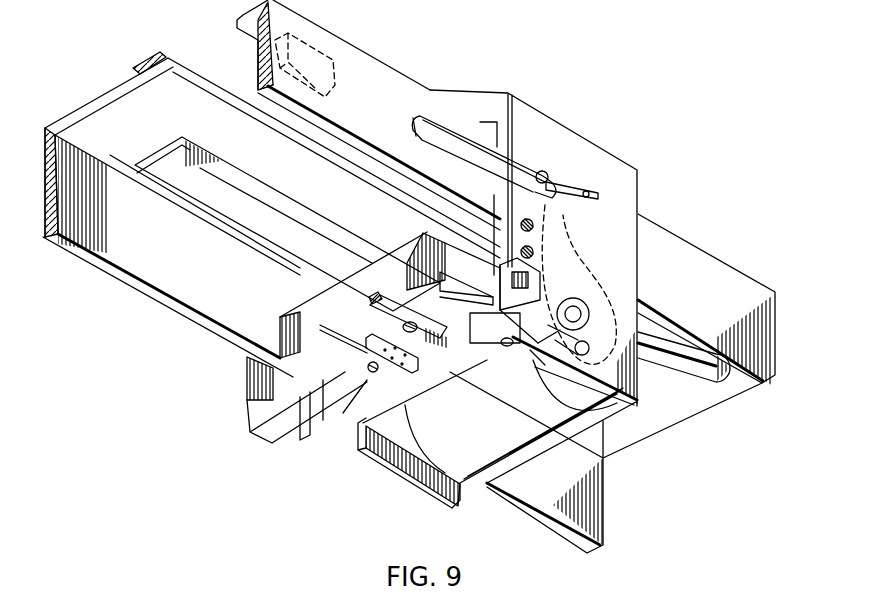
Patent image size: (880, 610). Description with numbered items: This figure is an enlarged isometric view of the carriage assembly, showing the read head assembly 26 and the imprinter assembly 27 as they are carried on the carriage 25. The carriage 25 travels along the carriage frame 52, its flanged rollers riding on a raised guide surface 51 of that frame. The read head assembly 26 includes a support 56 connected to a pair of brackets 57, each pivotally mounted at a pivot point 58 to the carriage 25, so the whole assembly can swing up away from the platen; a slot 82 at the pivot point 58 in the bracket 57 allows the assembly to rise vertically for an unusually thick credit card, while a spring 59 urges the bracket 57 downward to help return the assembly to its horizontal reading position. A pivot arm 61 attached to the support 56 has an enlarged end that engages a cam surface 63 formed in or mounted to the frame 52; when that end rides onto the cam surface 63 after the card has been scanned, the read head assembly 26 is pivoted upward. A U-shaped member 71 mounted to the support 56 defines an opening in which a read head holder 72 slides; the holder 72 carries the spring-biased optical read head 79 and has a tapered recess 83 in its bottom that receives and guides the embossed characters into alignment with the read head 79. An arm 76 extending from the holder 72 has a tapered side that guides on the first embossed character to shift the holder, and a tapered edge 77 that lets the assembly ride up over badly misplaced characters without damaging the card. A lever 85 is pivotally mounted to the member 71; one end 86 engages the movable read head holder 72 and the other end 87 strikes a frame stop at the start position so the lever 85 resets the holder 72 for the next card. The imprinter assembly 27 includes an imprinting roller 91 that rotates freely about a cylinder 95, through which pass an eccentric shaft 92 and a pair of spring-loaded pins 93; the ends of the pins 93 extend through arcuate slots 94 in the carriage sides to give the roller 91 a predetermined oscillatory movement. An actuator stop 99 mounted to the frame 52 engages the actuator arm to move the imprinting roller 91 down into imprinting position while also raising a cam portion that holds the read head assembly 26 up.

The carriage 25 is at (639, 194).
The read head assembly 26 is at (288, 298).
The imprinter assembly 27 is at (580, 434).
The raised guide surface 51 is at (148, 65).
The carriage frame 52 is at (382, 72).
The support 56 is at (267, 432).
The brackets 57 is at (462, 137).
The pivot point 58 is at (545, 173).
The spring 59 is at (433, 132).
The pivot arm 61 is at (320, 383).
The cam surface 63 is at (275, 212).
The U-shaped member 71 is at (287, 333).
The read head holder 72 is at (345, 407).
The arm 76 is at (387, 317).
The tapered edge 77 is at (377, 296).
The optical read head 79 is at (413, 365).
The slot 82 is at (547, 203).
The tapered recess 83 is at (373, 333).
The lever 85 is at (493, 313).
The one end of lever 86 is at (425, 262).
The other end of lever 87 is at (545, 340).
The imprinting roller 91 is at (472, 475).
The shaft 92 is at (576, 311).
The spring loaded pins 93 is at (590, 348).
The arcuate slots 94 is at (556, 370).
The cylinder 95 is at (590, 403).
The actuator stop 99 is at (315, 53).